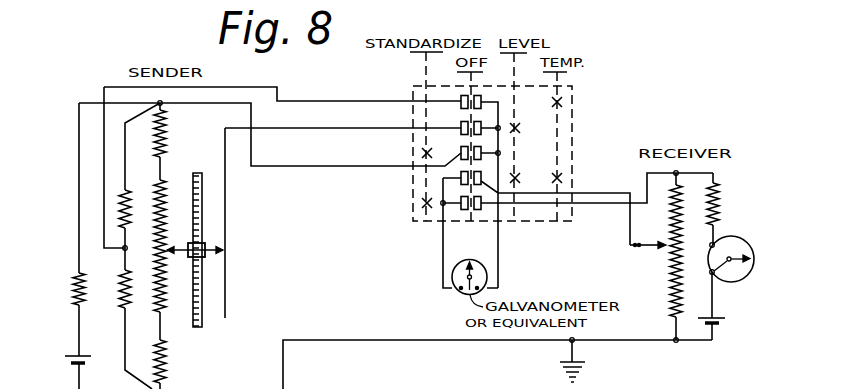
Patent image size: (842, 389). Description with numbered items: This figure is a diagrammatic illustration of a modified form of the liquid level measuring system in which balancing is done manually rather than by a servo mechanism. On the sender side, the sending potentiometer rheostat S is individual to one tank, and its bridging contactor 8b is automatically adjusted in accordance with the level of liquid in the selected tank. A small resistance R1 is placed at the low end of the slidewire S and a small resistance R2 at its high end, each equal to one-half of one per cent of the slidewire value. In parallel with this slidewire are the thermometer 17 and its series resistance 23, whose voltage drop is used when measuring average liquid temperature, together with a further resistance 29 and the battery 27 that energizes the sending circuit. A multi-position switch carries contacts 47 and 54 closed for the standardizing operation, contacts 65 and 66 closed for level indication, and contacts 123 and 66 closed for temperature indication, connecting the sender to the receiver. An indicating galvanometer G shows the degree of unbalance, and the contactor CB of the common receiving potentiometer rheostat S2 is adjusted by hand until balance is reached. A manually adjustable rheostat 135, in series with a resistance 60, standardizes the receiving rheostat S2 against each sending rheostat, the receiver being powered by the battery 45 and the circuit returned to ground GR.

The series resistance 23 is at (131, 199).
The thermometer 17 is at (116, 298).
The resistor 29 is at (73, 291).
The battery 27 is at (64, 361).
The bridging contactor 8b is at (175, 258).
The resistance R1 is at (170, 362).
The resistance R2 is at (170, 133).
The sending potentiometer rheostat S is at (170, 207).
The contacts 65 is at (464, 120).
The contacts 47 is at (462, 148).
The contacts 123 is at (483, 100).
The contacts 66 is at (481, 175).
The contacts 54 is at (472, 210).
The indicating galvanometer G is at (452, 273).
The resistor 60 is at (721, 205).
The manually adjustable rheostat 135 is at (746, 241).
The contactor CB is at (659, 237).
The common receiving potentiometer rheostat S2 is at (669, 280).
The battery 45 is at (722, 324).
The ground GR is at (583, 365).